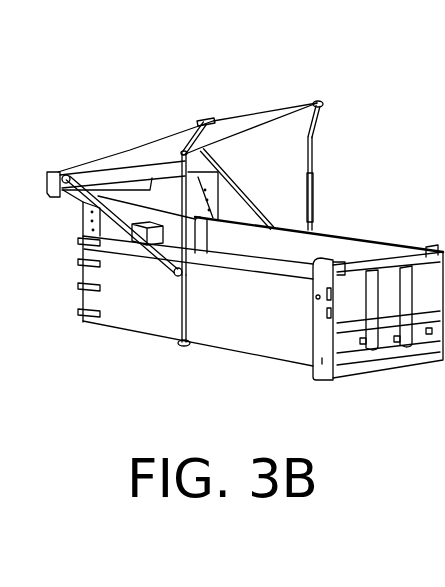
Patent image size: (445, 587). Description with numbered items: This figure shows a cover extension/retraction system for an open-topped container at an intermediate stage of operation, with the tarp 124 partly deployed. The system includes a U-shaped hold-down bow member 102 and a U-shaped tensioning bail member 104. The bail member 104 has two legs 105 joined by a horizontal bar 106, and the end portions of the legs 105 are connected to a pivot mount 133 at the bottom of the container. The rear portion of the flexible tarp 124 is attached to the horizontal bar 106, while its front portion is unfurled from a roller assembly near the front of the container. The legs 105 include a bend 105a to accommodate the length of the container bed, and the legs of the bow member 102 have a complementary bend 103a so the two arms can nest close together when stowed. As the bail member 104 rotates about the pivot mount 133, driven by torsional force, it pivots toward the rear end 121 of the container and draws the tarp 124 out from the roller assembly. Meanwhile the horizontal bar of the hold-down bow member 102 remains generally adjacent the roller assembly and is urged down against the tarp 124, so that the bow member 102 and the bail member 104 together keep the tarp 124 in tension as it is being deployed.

The hold-down bow member 102 is at (148, 253).
The complementary bend 103a is at (82, 213).
The tensioning bail member 104 is at (187, 308).
The legs 105 is at (187, 283).
The bend 105a is at (183, 152).
The horizontal bar 106 is at (318, 100).
The rear end 121 is at (380, 252).
The tarp 124 is at (230, 130).
The pivot mount 133 is at (180, 348).